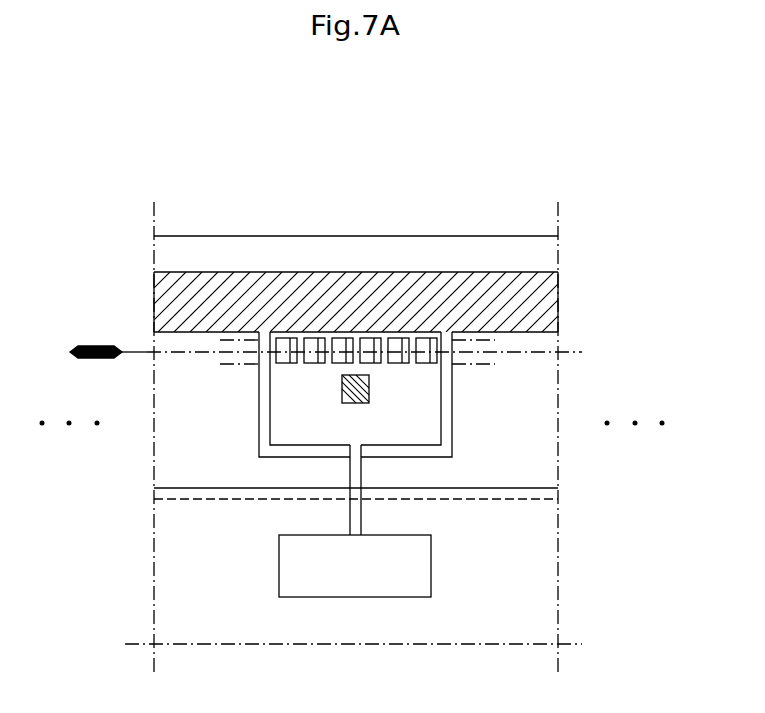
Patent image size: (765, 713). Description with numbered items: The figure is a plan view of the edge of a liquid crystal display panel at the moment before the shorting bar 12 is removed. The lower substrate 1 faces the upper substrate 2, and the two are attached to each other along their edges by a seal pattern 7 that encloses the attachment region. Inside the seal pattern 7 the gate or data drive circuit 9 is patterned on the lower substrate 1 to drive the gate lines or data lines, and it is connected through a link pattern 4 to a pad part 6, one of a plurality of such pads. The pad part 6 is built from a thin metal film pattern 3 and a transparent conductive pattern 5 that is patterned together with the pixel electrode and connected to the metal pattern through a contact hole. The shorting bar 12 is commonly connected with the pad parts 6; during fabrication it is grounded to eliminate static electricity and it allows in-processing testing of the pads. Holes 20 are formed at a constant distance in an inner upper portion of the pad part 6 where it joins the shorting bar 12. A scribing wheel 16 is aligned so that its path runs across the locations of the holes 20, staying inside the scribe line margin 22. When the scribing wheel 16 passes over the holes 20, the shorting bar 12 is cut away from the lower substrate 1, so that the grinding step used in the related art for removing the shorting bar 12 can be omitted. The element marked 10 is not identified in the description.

The lower substrate 1 is at (227, 247).
The shorting bar 12 is at (533, 302).
The scribing wheel 16 is at (93, 343).
The scribe line margin 22 is at (494, 338).
The holes 20 is at (383, 335).
The thin metal film pattern 3 is at (258, 420).
The transparent conductive pattern 5 is at (452, 446).
The pad part 6 is at (243, 392).
The sensor element 10 is at (369, 388).
The link pattern 4 is at (362, 471).
The upper substrate 2 is at (246, 488).
The seal pattern 7 is at (548, 492).
The gate or data drive circuit 9 is at (431, 565).